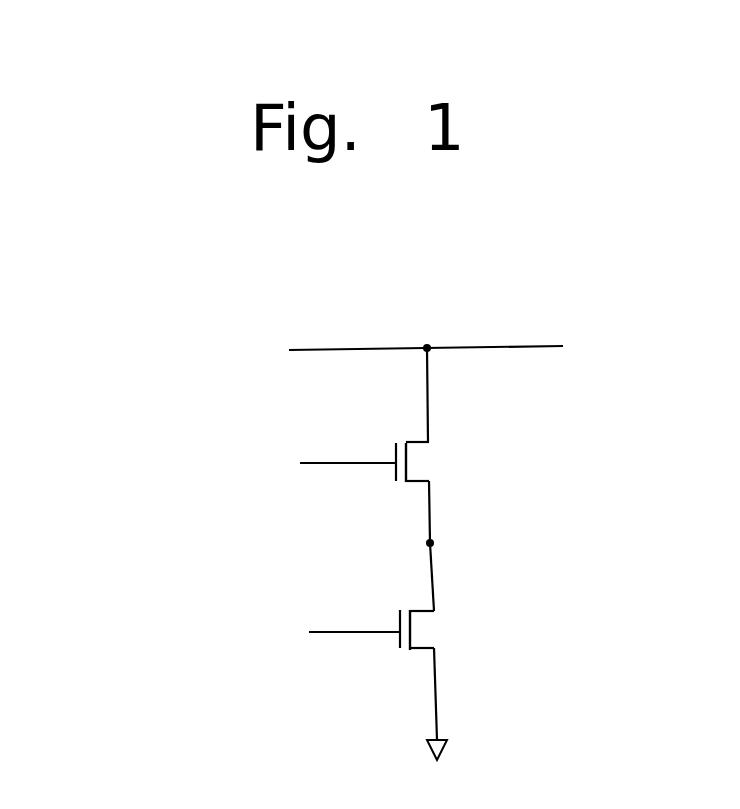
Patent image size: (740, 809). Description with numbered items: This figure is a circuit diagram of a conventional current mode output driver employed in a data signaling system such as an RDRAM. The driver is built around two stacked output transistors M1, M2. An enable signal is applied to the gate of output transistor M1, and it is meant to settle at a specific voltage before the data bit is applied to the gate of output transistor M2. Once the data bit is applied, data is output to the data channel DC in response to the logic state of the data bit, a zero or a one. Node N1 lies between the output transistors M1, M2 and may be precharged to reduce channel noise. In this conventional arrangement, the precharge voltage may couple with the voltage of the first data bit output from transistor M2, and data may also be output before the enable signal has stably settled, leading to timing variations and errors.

The data channel DC is at (540, 344).
The output transistor M1 is at (266, 462).
The output transistor M2 is at (281, 630).
The node N1 is at (434, 542).